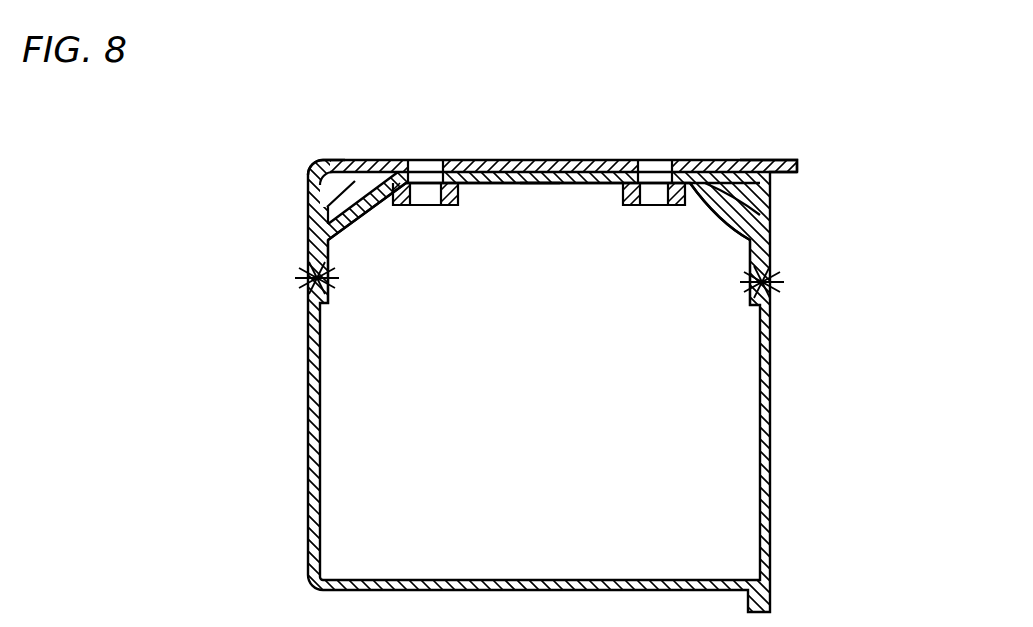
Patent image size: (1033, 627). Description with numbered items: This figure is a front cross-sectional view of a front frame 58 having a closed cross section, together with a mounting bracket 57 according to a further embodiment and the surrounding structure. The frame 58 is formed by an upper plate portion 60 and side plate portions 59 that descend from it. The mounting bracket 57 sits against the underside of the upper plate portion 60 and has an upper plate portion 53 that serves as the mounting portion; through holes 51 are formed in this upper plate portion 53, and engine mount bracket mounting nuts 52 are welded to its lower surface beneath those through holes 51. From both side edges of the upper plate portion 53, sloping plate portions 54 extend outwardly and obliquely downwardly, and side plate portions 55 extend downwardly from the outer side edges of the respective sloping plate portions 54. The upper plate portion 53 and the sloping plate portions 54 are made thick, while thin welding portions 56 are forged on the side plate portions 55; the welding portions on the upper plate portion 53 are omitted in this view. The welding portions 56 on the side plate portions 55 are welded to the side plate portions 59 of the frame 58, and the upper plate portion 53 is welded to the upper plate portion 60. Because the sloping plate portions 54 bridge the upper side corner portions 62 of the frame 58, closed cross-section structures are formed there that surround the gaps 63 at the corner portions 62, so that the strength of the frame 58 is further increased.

The through holes 51 is at (428, 165).
The engine mount bracket mounting nuts 52 is at (458, 203).
The upper plate portion 53 is at (538, 185).
The sloping plate portions 54 is at (316, 192).
The side plate portions 55 is at (312, 250).
The welding portions 56 is at (310, 302).
The mounting bracket 57 is at (352, 222).
The frame 58 is at (772, 483).
The side plate portions 59 is at (320, 452).
The upper plate portion 60 is at (540, 160).
The upper side corner portions 62 is at (337, 162).
The gaps 63 is at (362, 162).